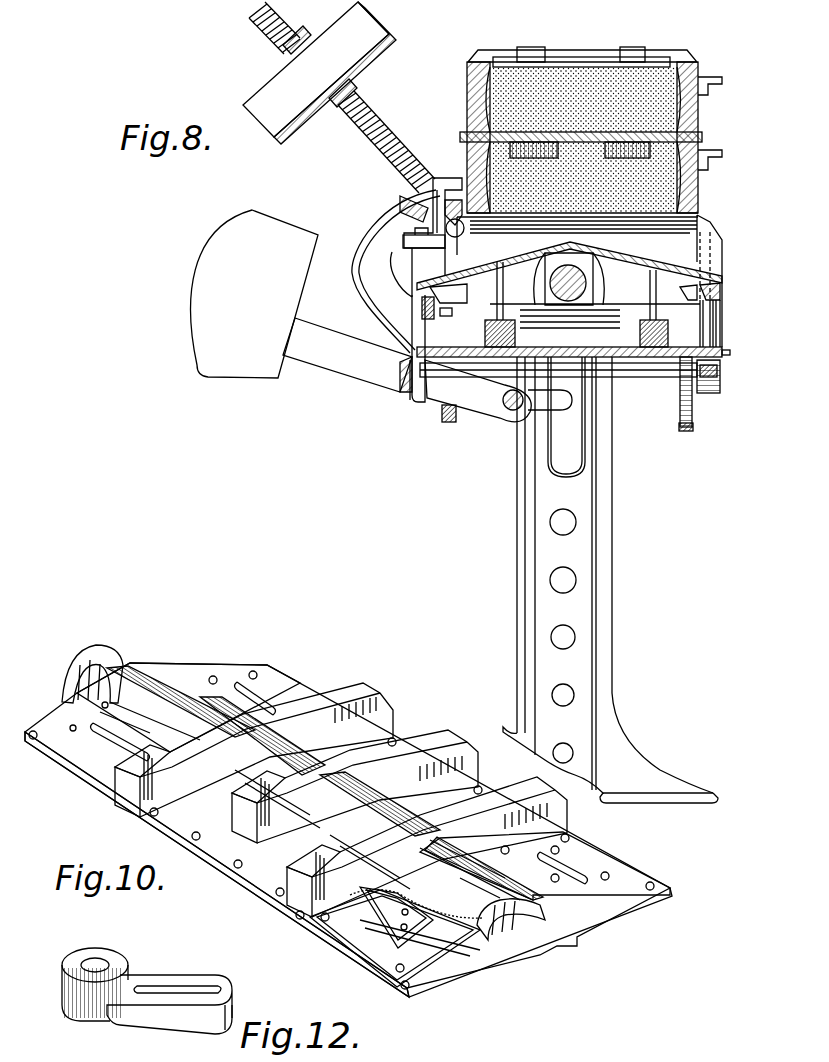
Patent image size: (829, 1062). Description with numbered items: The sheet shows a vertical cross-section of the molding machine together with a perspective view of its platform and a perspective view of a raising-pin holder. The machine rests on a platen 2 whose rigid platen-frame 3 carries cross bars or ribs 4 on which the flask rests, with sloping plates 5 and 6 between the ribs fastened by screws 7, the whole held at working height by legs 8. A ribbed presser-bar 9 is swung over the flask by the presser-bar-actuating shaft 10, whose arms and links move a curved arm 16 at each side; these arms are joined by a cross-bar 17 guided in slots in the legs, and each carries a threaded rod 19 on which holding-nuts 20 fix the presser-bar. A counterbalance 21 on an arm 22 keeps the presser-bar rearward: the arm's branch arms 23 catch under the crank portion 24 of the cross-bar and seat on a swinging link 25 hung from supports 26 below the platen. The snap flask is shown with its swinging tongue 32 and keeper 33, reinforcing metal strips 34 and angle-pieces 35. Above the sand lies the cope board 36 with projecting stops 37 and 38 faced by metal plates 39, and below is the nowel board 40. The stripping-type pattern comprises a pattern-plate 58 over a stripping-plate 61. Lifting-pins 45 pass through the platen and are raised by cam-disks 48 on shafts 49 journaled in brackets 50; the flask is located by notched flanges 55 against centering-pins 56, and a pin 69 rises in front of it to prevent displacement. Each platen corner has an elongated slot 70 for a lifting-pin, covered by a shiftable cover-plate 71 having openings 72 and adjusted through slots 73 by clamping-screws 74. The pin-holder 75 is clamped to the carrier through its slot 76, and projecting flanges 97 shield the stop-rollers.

In FIG. 8, the platen 2 is at (595, 290).
In FIG. 10, the platen 2 is at (348, 830).
In FIG. 8, the platen-frame 3 is at (708, 297).
In FIG. 10, the platen-frame 3 is at (90, 788).
In FIG. 8, the cross bars or ribs 4 is at (698, 281).
In FIG. 10, the cross bars or ribs 4 is at (341, 800).
In FIG. 8, the plate 5 is at (706, 275).
In FIG. 10, the plate 5 is at (373, 781).
In FIG. 10, the plate 6 is at (320, 793).
In FIG. 10, the screws 7 is at (196, 835).
In FIG. 8, the legs 8 is at (610, 580).
In FIG. 8, the presser-bar 9 is at (319, 73).
In FIG. 8, the presser-bar-actuating shaft 10 is at (580, 308).
In FIG. 8, the curved arm 16 is at (398, 296).
In FIG. 8, the cross-bar 17 is at (566, 413).
In FIG. 8, the threaded rod 19 is at (378, 154).
In FIG. 8, the holding-nuts 20 is at (284, 46).
In FIG. 8, the counterbalance 21 is at (254, 294).
In FIG. 8, the arm 22 is at (347, 355).
In FIG. 8, the branch arms 23 is at (478, 391).
In FIG. 8, the crank portion 24 is at (512, 410).
In FIG. 8, the swinging link 25 is at (416, 398).
In FIG. 8, the supports 26 is at (438, 310).
In FIG. 8, the swinging tongue 32 is at (722, 77).
In FIG. 8, the keeper 33 is at (712, 86).
In FIG. 8, the metal strips 34 is at (468, 62).
In FIG. 8, the angle-pieces 35 is at (485, 90).
In FIG. 8, the cope board 36 is at (568, 62).
In FIG. 8, the projecting stop 37 is at (633, 47).
In FIG. 8, the projecting stop 38 is at (680, 50).
In FIG. 8, the metal plates 39 is at (520, 58).
In FIG. 8, the nowel board 40 is at (642, 214).
In FIG. 8, the lifting-pins 45 is at (652, 283).
In FIG. 8, the cam-disk 48 is at (449, 422).
In FIG. 8, the shaft 49 is at (665, 378).
In FIG. 8, the brackets 50 is at (720, 330).
In FIG. 8, the flanges 55 is at (453, 178).
In FIG. 8, the centering-pins 56 is at (405, 208).
In FIG. 8, the pattern-plate 58 is at (702, 135).
In FIG. 8, the stripping-plate 61 is at (462, 137).
In FIG. 8, the pin 69 is at (713, 312).
In FIG. 10, the elongated slot 70 is at (250, 690).
In FIG. 10, the cover-plate 71 is at (392, 930).
In FIG. 10, the openings 72 is at (402, 895).
In FIG. 10, the slots 73 is at (440, 935).
In FIG. 10, the clamping-screws 74 is at (95, 718).
In FIG. 8, the pin-holder 75 is at (486, 334).
In FIG. 12, the pin-holder 75 is at (160, 982).
In FIG. 12, the slot 76 is at (195, 986).
In FIG. 10, the projecting flanges 97 is at (70, 660).